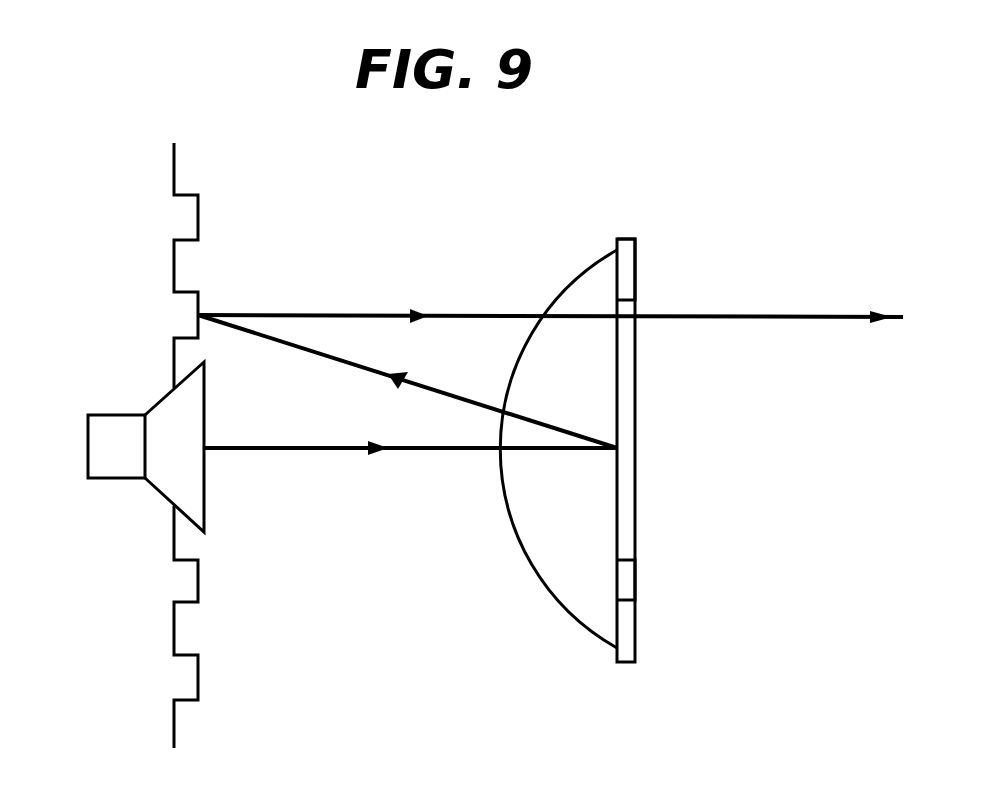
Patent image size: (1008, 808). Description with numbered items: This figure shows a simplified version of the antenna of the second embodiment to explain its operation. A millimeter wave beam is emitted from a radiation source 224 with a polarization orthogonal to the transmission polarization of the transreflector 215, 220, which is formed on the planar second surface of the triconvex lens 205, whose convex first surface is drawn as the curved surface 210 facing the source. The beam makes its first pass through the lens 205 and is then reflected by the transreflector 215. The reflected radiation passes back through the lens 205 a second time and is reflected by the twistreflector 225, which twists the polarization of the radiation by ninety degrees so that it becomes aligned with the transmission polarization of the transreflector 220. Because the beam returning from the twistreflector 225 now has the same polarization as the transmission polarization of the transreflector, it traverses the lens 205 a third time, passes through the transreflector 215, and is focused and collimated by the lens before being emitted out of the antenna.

The triconvex lens 205 is at (588, 497).
The curved lens surface 210 is at (503, 468).
The transreflector 215 is at (628, 569).
The transreflector 220 is at (634, 283).
The radiation source 224 is at (112, 414).
The twistreflector 225 is at (198, 677).